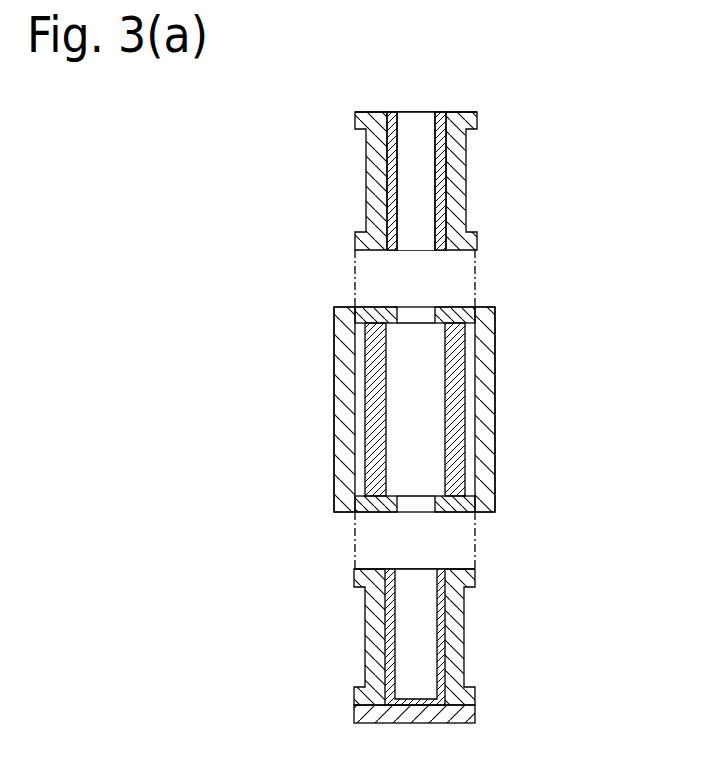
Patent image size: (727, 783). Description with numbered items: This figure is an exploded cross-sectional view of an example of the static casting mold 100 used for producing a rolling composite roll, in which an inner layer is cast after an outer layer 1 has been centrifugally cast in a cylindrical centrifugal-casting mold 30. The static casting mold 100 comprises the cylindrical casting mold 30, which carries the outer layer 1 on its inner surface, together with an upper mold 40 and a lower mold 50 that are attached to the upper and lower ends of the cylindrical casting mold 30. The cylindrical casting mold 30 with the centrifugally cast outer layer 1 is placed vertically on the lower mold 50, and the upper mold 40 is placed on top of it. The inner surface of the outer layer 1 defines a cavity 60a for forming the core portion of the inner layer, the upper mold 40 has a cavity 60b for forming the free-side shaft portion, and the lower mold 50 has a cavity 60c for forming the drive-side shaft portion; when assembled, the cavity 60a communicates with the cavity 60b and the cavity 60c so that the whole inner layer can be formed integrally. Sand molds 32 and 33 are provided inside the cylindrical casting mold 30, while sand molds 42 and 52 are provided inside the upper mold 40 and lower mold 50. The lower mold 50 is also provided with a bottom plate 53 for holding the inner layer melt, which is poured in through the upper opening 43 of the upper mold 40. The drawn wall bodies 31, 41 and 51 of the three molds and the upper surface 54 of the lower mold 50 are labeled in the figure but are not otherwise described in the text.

The static casting mold 100 is at (614, 321).
The outer layer 1 is at (480, 445).
The cylindrical casting mold 30 is at (534, 381).
The outer wall 31 is at (489, 413).
The sand mold 32 is at (470, 347).
The sand mold 33 is at (456, 305).
The upper mold 40 is at (529, 178).
The outer body of upper member 41 is at (458, 155).
The sand mold 42 is at (447, 212).
The upper opening 43 is at (413, 110).
The lower mold 50 is at (529, 638).
The outer body of lower member 51 is at (458, 612).
The sand mold 52 is at (446, 661).
The bottom plate 53 is at (471, 717).
The top surface of lower member 54 is at (410, 568).
The cavity 60a is at (408, 403).
The cavity 60b is at (410, 180).
The cavity 60c is at (410, 630).